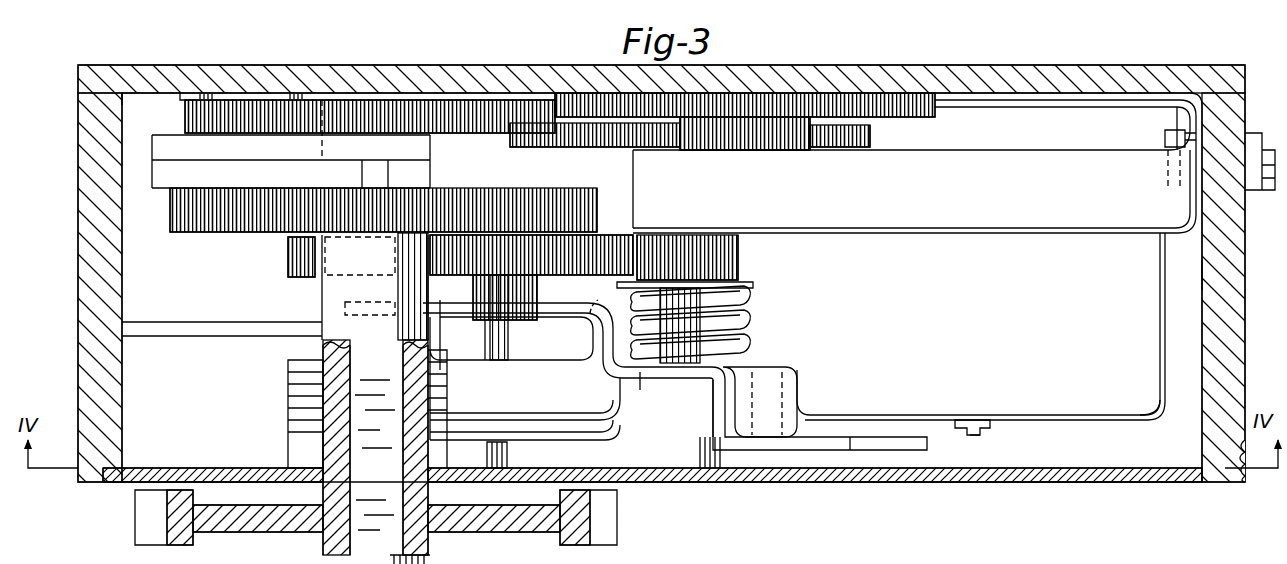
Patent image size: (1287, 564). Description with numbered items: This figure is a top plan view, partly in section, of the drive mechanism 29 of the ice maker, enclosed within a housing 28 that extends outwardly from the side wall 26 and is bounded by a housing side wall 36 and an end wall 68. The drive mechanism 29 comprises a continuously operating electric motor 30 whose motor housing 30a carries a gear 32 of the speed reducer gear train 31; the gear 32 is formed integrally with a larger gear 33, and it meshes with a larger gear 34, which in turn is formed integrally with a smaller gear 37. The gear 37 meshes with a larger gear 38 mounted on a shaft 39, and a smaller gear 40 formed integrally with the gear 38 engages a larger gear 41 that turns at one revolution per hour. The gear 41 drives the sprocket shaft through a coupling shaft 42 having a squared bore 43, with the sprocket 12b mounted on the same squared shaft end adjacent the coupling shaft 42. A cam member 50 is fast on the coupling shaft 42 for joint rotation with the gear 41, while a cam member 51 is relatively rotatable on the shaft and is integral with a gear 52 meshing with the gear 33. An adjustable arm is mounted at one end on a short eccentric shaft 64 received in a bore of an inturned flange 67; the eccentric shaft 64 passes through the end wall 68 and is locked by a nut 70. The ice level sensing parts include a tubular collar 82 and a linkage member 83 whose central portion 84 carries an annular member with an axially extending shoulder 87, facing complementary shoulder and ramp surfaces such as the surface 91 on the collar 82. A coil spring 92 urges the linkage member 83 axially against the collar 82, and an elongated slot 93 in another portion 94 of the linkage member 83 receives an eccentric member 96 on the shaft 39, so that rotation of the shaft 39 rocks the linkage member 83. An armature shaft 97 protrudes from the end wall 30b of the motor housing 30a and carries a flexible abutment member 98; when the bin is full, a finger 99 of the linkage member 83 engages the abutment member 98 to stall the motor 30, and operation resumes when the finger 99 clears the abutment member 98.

The housing 28 is at (1228, 117).
The side wall 26 is at (817, 483).
The side wall of the housing 36 is at (145, 95).
The end wall 68 is at (1235, 280).
The nut 70 is at (1255, 148).
The gear 52 is at (190, 112).
The speed reducer gear train 31 is at (285, 100).
The larger gear 33 is at (873, 100).
The gear 32 is at (722, 140).
The larger gear 34 is at (860, 125).
The cam member 51 is at (155, 146).
The cam member 50 is at (155, 172).
The smaller gear 40 is at (348, 188).
The larger gear 41 is at (192, 212).
The larger gear 38 is at (591, 245).
The smaller gear 37 is at (736, 262).
The coupling shaft 42 is at (338, 325).
The squared bore 43 is at (328, 426).
The sprocket 12b is at (600, 534).
The drive mechanism 29 is at (1050, 130).
The inturned flange 67 is at (1185, 117).
The eccentric shaft 64 is at (1166, 138).
The electric motor 30 is at (1148, 378).
The motor housing 30a is at (1012, 318).
The end wall 30b is at (1118, 420).
The abutment member 98 is at (963, 420).
The armature shaft 97 is at (978, 437).
The coil spring 92 is at (742, 325).
The elongated slot 93 is at (575, 315).
The central portion 84 is at (627, 370).
The linkage member 83 is at (583, 360).
The shaft 39 is at (505, 350).
The eccentric member 96 is at (452, 292).
The portion of the linkage member 94 is at (487, 318).
The ramp surface 91 is at (660, 372).
The axially extending wall or shoulder 87 is at (705, 435).
The tubular collar 82 is at (700, 455).
The projection or finger 99 is at (893, 452).